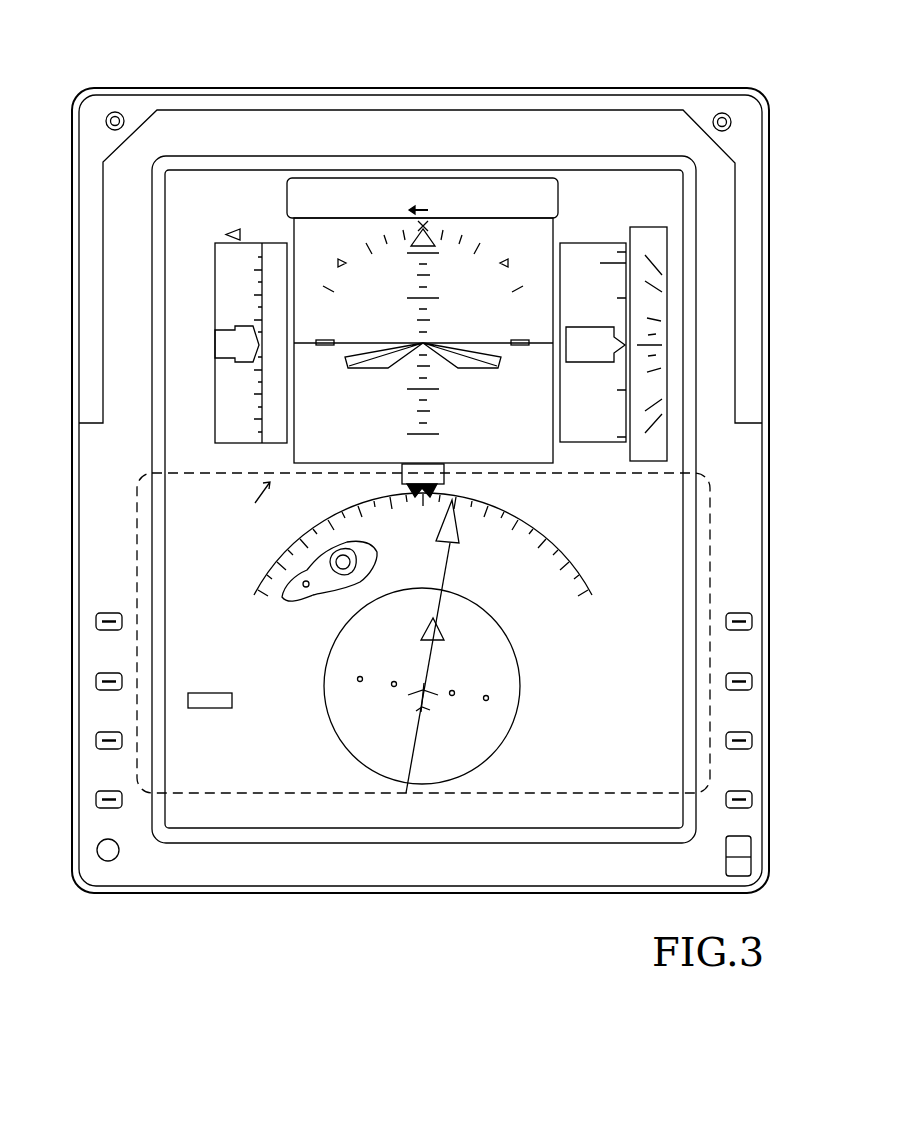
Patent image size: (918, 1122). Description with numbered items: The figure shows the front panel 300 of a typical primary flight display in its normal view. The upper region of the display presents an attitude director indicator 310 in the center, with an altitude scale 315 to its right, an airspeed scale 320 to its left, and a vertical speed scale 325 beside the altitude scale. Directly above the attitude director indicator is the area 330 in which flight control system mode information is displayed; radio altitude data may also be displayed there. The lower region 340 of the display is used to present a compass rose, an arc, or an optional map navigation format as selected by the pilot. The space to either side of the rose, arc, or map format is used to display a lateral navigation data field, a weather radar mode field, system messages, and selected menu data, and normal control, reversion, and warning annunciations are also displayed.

The front panel 300 is at (205, 42).
The attitude director indicator 310 is at (535, 233).
The altitude scale 315 is at (618, 243).
The airspeed scale 320 is at (214, 262).
The vertical speed scale 325 is at (667, 247).
The area above the ADI 330 is at (503, 187).
The lower region 340 is at (712, 518).